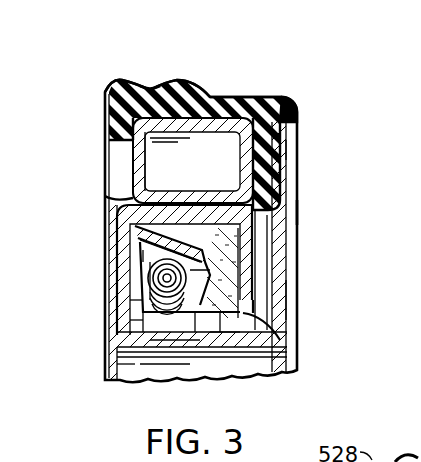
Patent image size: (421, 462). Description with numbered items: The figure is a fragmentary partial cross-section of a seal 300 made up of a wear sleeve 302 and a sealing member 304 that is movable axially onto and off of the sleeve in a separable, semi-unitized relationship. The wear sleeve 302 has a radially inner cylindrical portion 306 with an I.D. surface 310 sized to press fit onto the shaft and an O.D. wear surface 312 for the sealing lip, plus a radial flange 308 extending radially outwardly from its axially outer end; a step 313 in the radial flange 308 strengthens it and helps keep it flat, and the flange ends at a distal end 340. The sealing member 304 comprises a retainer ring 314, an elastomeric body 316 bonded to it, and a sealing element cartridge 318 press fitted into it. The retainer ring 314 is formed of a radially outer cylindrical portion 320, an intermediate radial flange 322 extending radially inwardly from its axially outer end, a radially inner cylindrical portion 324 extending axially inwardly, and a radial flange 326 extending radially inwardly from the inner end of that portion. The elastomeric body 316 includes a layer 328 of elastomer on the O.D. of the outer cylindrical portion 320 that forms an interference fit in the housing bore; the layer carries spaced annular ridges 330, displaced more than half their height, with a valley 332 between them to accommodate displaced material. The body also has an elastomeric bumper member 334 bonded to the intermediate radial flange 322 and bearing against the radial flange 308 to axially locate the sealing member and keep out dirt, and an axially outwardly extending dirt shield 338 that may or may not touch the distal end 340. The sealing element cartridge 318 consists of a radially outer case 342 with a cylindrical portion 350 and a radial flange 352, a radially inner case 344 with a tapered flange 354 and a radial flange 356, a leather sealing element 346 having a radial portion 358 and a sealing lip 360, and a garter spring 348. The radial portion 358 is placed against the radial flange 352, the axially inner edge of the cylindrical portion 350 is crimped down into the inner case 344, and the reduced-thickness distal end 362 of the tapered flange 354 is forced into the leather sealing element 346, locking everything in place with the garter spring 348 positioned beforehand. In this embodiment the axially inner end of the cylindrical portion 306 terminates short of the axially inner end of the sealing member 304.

The seal 300 is at (400, 88).
The wear sleeve 302 is at (308, 277).
The sealing member 304 is at (280, 94).
The radially inner cylindrical portion 306 is at (170, 345).
The radial flange 308 is at (280, 298).
The I.D. surface 310 is at (218, 345).
The O.D. wear surface 312 is at (135, 342).
The step 313 is at (293, 212).
The retainer ring 314 is at (158, 143).
The elastomeric body 316 is at (252, 94).
The sealing element cartridge 318 is at (150, 276).
The radially outer cylindrical portion 320 is at (138, 138).
The intermediate radial flange 322 is at (238, 155).
The radially inner cylindrical portion 324 is at (290, 167).
The radial flange 326 is at (110, 222).
The layer of elastomer 328 is at (122, 103).
The annular ridges 330 is at (192, 82).
The valley 332 is at (153, 88).
The elastomeric bumper member 334 is at (286, 150).
The dirt shield 338 is at (292, 98).
The distal end 340 is at (298, 117).
The radially outer case 342 is at (138, 222).
The radially inner case 344 is at (125, 303).
The leather sealing element 346 is at (225, 322).
The garter spring 348 is at (130, 320).
The cylindrical portion 350 is at (133, 180).
The radial flange 352 is at (283, 268).
The tapered flange 354 is at (140, 262).
The radial flange 356 is at (135, 246).
The radial portion 358 is at (290, 238).
The sealing lip 360 is at (130, 364).
The distal end 362 is at (200, 342).